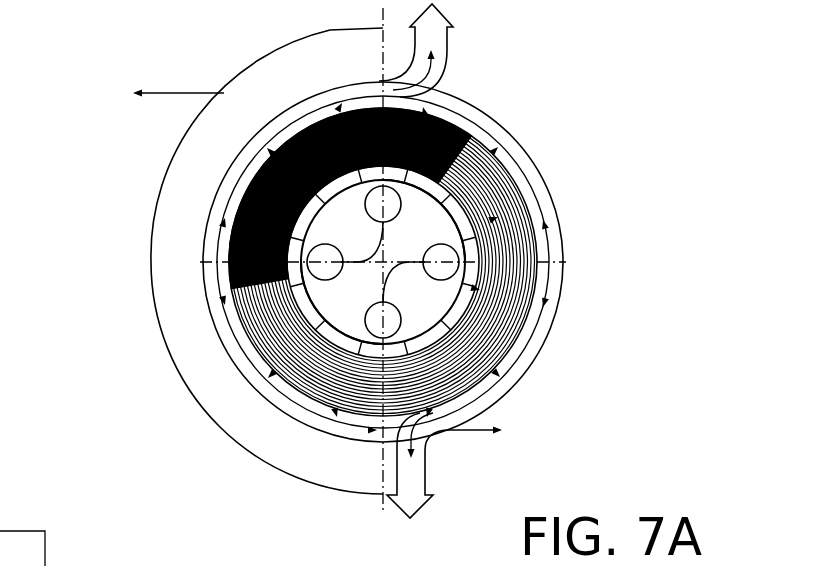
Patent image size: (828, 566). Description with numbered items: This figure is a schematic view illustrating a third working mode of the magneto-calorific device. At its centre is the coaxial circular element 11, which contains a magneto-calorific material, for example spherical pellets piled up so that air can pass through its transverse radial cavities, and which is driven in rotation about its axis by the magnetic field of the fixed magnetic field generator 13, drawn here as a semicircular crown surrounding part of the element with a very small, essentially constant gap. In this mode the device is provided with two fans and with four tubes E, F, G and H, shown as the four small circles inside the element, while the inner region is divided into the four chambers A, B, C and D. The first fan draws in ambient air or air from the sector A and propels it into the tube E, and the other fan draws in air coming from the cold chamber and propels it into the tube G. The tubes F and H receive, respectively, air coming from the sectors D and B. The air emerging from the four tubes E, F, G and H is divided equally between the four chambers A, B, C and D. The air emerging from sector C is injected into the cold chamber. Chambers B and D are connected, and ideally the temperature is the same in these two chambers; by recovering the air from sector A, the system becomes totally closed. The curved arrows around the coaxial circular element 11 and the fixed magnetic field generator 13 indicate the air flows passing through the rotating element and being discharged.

The coaxial circular element 11 is at (476, 141).
The fixed magnetic field generator 13 is at (183, 322).
The tube E is at (383, 204).
The tube F is at (441, 262).
The tube G is at (383, 320).
The tube H is at (325, 262).
The chamber A is at (362, 240).
The chamber B is at (424, 221).
The chamber C is at (404, 286).
The chamber D is at (342, 303).